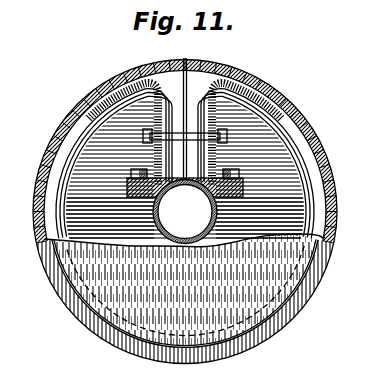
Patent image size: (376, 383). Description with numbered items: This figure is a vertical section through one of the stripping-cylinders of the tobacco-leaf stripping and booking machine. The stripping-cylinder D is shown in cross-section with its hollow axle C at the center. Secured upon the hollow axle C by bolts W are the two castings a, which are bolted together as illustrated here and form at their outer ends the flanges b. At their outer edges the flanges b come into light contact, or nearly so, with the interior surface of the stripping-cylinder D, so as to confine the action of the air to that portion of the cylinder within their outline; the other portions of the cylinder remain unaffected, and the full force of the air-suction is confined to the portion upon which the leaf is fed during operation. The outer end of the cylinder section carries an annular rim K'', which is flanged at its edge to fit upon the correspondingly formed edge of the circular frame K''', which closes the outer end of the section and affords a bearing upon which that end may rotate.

The stripping-cylinder D is at (191, 212).
The flanges b is at (95, 104).
The castings a is at (185, 127).
The bolts W is at (185, 170).
The hollow axle C is at (185, 212).
The circular frame K''' is at (185, 290).
The annular rim K'' is at (184, 301).